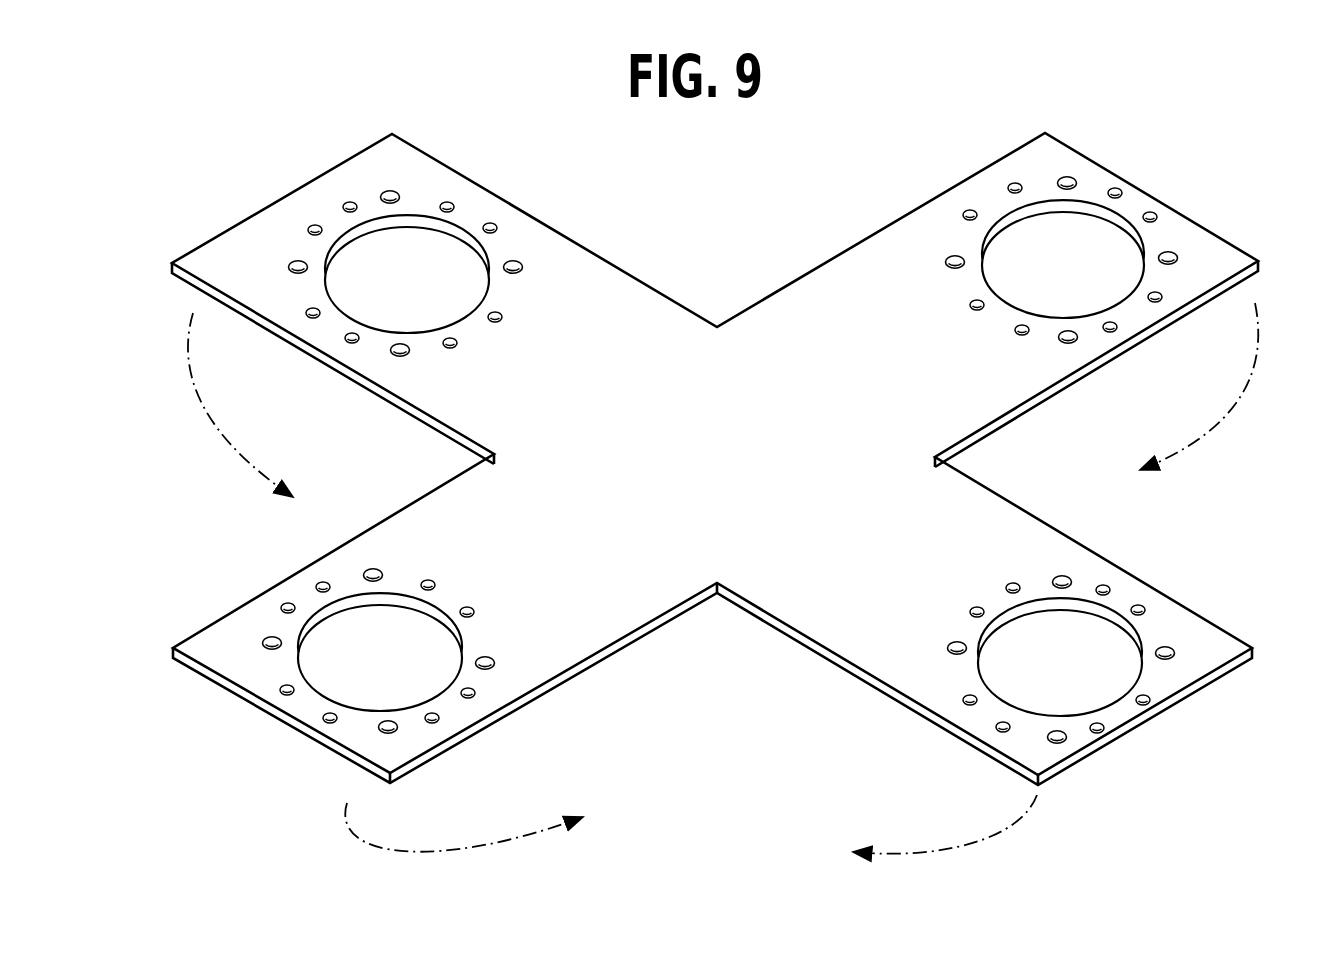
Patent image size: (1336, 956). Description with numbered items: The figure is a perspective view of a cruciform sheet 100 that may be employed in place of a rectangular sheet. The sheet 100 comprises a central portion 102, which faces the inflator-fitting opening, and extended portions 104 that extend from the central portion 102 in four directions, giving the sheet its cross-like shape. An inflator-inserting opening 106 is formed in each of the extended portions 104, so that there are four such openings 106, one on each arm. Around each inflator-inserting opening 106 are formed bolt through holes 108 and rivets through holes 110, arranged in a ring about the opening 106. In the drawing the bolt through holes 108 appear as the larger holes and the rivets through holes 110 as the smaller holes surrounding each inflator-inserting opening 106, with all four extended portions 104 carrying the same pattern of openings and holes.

The sheet 100 is at (607, 245).
The central portion 102 is at (745, 450).
The extended portions 104 is at (382, 397).
The inflator-inserting openings 106 is at (417, 330).
The bolt through holes 108 is at (520, 273).
The rivets through holes 110 is at (501, 322).